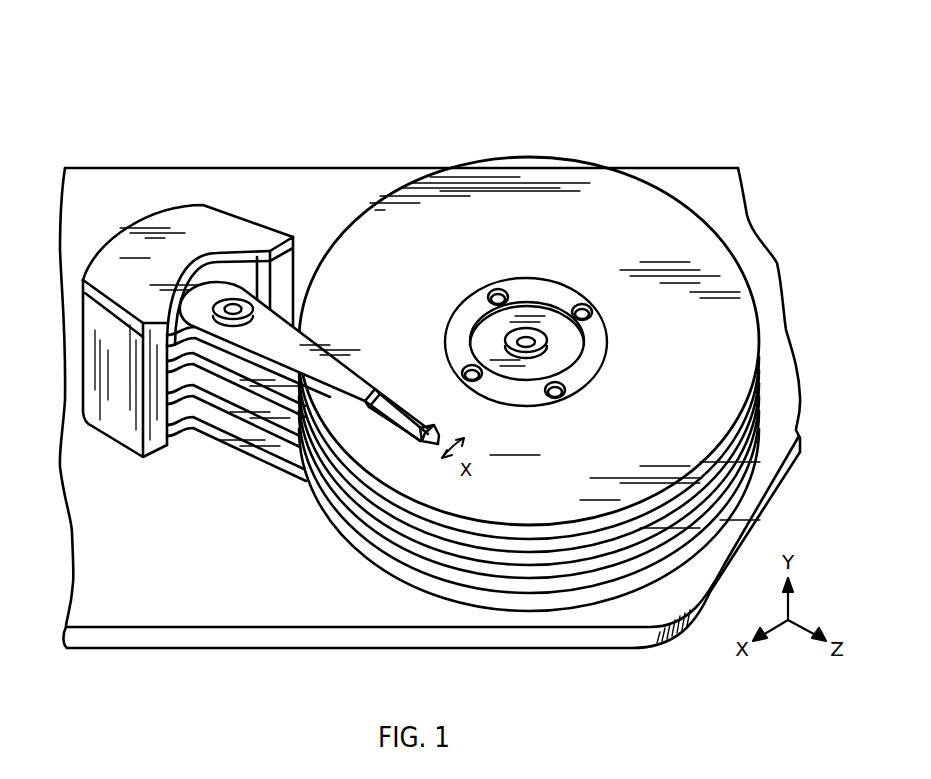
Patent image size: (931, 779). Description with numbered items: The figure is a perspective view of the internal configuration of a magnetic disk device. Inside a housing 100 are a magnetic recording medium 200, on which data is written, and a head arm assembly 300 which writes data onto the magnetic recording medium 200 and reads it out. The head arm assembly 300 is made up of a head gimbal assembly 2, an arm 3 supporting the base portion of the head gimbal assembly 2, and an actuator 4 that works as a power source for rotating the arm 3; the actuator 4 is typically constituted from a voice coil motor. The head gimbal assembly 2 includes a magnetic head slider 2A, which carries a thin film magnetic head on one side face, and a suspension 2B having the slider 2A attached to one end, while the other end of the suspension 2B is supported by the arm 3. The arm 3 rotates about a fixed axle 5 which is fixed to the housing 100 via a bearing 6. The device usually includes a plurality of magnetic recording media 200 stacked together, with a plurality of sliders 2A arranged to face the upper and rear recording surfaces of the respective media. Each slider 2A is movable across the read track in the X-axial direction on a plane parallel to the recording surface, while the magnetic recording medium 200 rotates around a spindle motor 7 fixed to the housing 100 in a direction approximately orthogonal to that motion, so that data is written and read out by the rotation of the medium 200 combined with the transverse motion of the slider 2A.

The head arm assembly 300 is at (70, 42).
The head gimbal assembly 2 is at (583, 85).
The magnetic head slider 2A is at (425, 415).
The suspension 2B is at (397, 412).
The arm 3 is at (327, 360).
The actuator 4 is at (146, 206).
The fixed axle 5 is at (233, 308).
The bearing 6 is at (214, 299).
The spindle motor 7 is at (526, 350).
The housing 100 is at (692, 185).
The magnetic recording medium 200 is at (702, 320).